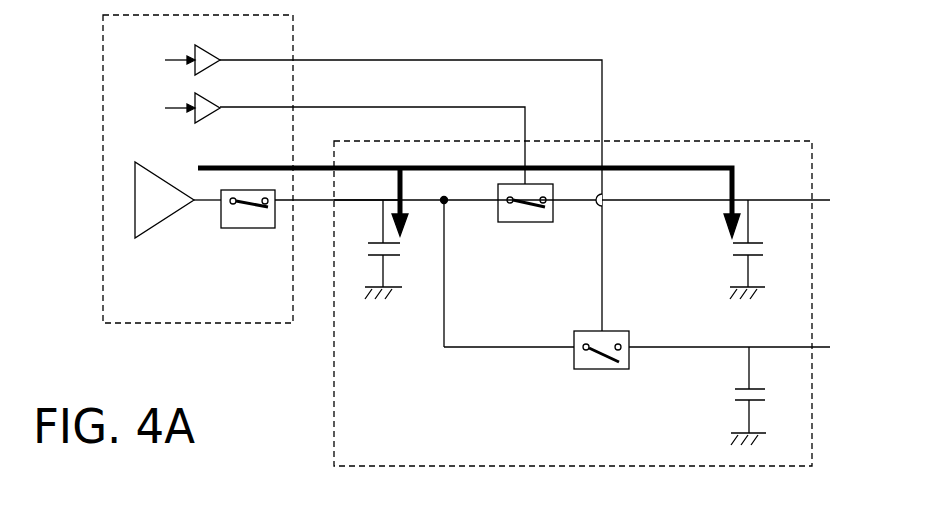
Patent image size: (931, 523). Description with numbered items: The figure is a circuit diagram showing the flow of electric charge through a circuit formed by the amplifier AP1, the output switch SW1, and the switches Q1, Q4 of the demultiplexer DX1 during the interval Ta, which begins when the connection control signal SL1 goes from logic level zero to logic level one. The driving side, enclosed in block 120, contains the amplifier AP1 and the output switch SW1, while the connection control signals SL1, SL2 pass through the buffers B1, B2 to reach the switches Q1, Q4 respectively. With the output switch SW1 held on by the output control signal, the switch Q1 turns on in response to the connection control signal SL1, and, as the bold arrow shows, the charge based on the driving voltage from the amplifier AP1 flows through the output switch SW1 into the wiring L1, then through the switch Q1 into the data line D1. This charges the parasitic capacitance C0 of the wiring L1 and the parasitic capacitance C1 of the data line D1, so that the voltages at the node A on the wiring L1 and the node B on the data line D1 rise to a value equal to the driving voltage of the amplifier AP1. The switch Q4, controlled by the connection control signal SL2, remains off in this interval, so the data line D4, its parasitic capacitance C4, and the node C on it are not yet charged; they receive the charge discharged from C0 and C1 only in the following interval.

The drive circuit 120 is at (295, 33).
The demultiplexer DX1 is at (752, 141).
The connection control signal SL1 is at (160, 110).
The connection control signal SL2 is at (160, 62).
The buffer B1 is at (210, 100).
The buffer B2 is at (210, 52).
The amplifier AP1 is at (160, 175).
The output switch SW1 is at (241, 228).
The wiring L1 is at (348, 199).
The node A is at (445, 260).
The node B is at (748, 207).
The node C is at (750, 355).
The parasitic capacitance C0 is at (378, 242).
The parasitic capacitance C1 is at (757, 243).
The parasitic capacitance C4 is at (760, 388).
The switch Q1 is at (506, 222).
The switch Q4 is at (585, 369).
The data line D1 is at (568, 200).
The data line D4 is at (653, 347).